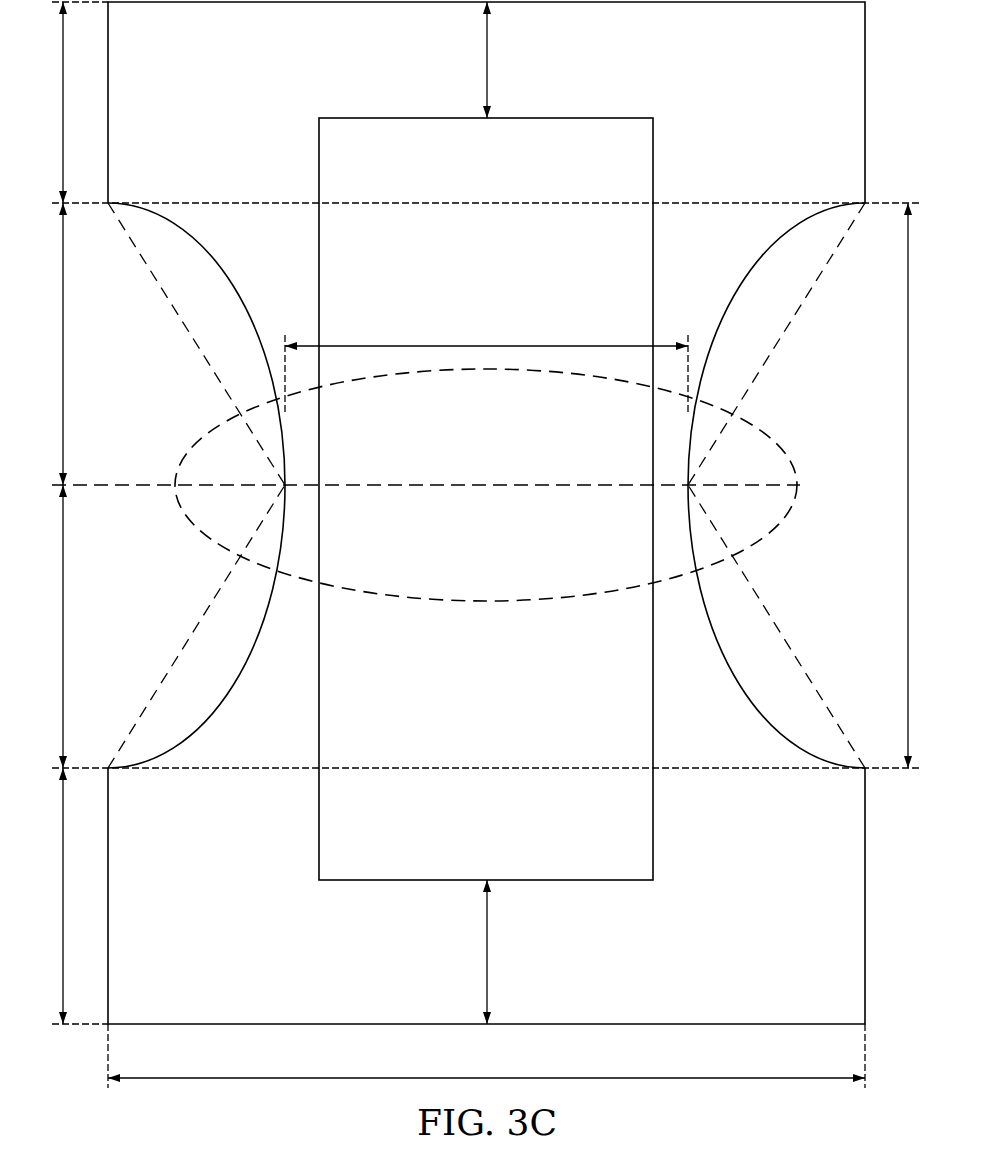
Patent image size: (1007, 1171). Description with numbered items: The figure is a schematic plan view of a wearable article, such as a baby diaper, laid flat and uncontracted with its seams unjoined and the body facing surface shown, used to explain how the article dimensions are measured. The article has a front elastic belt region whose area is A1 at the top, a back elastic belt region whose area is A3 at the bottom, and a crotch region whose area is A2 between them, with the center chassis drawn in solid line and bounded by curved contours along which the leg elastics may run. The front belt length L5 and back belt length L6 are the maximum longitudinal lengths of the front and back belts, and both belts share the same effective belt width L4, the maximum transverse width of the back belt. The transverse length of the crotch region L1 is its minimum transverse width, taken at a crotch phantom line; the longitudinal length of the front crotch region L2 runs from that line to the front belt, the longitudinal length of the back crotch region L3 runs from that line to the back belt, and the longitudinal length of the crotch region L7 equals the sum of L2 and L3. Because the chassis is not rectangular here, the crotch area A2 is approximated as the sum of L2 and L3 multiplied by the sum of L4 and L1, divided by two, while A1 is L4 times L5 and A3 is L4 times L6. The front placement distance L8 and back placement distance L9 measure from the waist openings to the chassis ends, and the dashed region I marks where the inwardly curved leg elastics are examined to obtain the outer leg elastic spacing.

The front elastic belt region area A1 is at (157, 113).
The crotch region area A2 is at (289, 258).
The back elastic belt region area A3 is at (157, 908).
The region I is at (486, 505).
The transverse length of crotch region L1 is at (486, 364).
The longitudinal length of front crotch region L2 is at (52, 344).
The longitudinal length of back crotch region L3 is at (52, 626).
The effective belt width L4 is at (486, 1065).
The front belt length L5 is at (52, 102).
The back belt length L6 is at (52, 896).
The longitudinal length of crotch region L7 is at (920, 485).
The front placement distance L8 is at (475, 60).
The back placement distance L9 is at (475, 952).